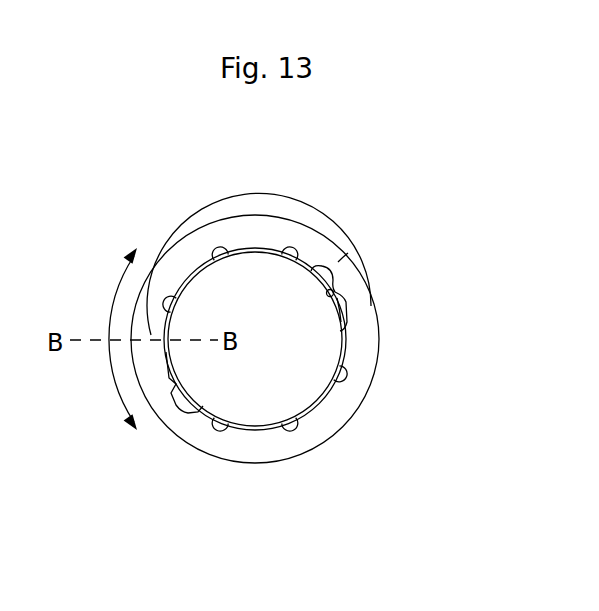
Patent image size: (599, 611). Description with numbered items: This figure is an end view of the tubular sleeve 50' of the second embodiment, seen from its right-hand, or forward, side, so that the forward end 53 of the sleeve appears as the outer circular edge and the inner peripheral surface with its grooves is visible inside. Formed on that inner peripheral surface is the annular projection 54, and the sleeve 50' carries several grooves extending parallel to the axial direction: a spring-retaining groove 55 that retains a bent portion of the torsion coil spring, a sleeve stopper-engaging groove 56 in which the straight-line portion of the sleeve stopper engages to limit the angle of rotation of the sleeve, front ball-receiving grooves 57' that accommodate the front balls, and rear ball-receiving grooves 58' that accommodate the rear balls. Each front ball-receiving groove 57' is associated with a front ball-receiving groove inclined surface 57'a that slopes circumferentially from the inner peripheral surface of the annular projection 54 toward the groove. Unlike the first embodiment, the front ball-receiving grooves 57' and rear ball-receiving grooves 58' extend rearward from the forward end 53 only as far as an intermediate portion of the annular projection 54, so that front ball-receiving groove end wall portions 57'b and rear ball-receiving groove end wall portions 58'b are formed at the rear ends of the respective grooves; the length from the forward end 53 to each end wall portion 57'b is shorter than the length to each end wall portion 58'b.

The tubular sleeve 50' is at (250, 287).
The forward end 53 is at (261, 225).
The annular projection 54 is at (198, 283).
The spring-retaining groove 55 is at (175, 411).
The sleeve stopper-engaging groove 56 is at (338, 264).
The front ball-receiving grooves 57' is at (298, 319).
The front ball-receiving groove inclined surfaces 57'a is at (389, 298).
The front ball-receiving groove end wall portions 57'b is at (294, 292).
The rear ball-receiving grooves 58' is at (266, 324).
The rear ball-receiving groove end wall portions 58'b is at (294, 388).